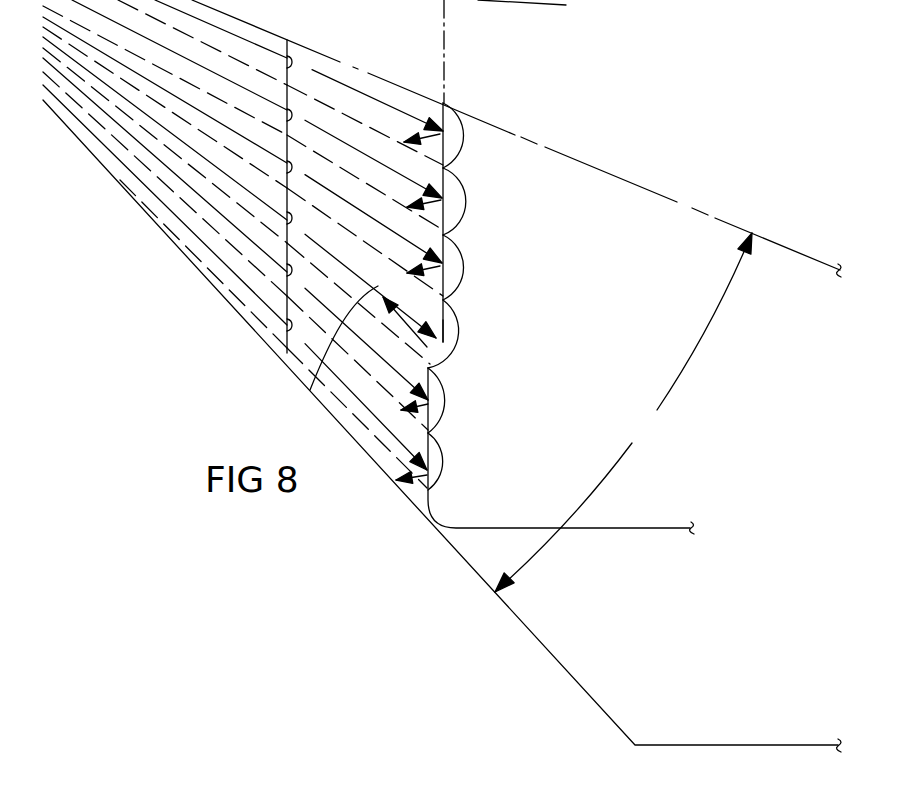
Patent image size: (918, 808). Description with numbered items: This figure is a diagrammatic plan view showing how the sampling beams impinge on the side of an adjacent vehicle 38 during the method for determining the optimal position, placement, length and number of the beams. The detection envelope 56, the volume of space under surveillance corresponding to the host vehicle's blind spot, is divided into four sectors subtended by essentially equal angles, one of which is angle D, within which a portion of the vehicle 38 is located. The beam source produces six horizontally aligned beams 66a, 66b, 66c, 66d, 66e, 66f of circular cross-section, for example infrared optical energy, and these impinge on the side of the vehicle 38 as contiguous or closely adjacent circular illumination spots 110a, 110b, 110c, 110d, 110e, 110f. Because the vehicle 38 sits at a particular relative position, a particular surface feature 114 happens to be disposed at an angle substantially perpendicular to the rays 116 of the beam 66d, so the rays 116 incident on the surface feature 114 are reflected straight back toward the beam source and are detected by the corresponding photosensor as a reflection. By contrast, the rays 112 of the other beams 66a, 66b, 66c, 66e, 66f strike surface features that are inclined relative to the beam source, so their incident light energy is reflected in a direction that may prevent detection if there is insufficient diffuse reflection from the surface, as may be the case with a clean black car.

The adjacent vehicle 38 is at (648, 290).
The detection envelope 56 is at (558, 671).
The beam 66a is at (280, 82).
The beam 66b is at (243, 115).
The beam 66c is at (243, 156).
The beam 66d is at (239, 200).
The beam 66e is at (235, 244).
The beam 66f is at (235, 286).
The illumination spot 110a is at (461, 131).
The illumination spot 110b is at (458, 203).
The illumination spot 110c is at (457, 273).
The illumination spot 110d is at (450, 333).
The illumination spot 110e is at (445, 396).
The illumination spot 110f is at (438, 462).
The rays 112 is at (373, 102).
The surface feature 114 is at (443, 350).
The rays 116 is at (310, 390).
The angle D is at (623, 412).